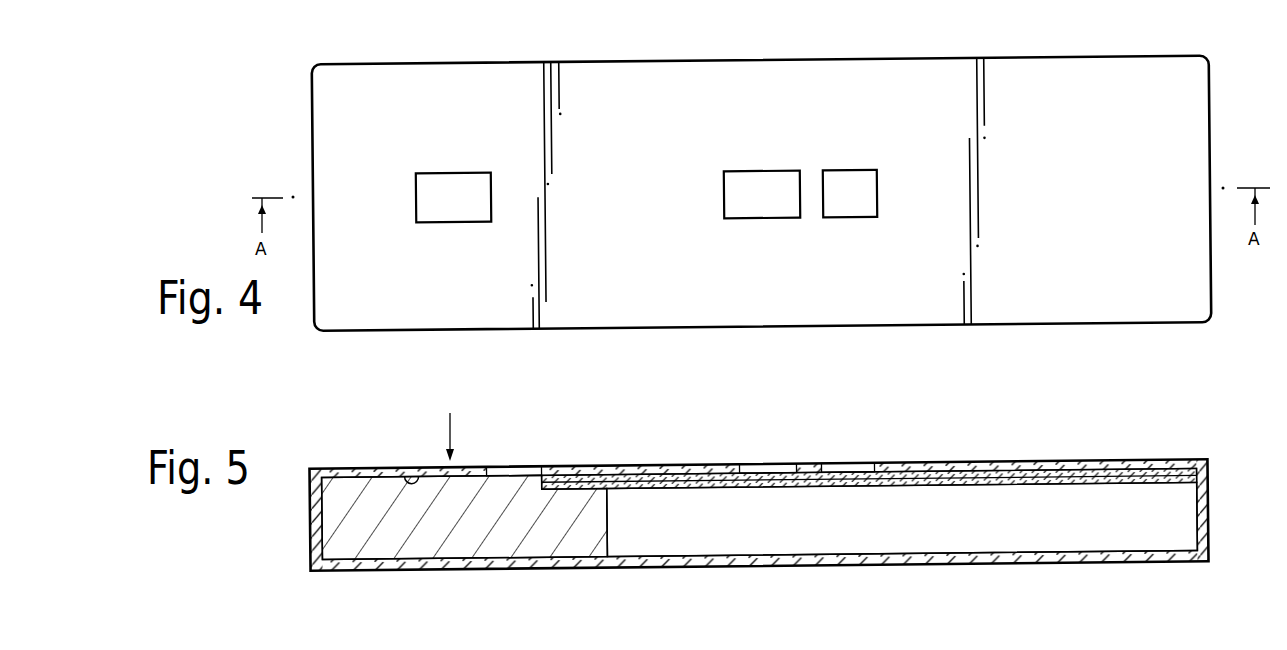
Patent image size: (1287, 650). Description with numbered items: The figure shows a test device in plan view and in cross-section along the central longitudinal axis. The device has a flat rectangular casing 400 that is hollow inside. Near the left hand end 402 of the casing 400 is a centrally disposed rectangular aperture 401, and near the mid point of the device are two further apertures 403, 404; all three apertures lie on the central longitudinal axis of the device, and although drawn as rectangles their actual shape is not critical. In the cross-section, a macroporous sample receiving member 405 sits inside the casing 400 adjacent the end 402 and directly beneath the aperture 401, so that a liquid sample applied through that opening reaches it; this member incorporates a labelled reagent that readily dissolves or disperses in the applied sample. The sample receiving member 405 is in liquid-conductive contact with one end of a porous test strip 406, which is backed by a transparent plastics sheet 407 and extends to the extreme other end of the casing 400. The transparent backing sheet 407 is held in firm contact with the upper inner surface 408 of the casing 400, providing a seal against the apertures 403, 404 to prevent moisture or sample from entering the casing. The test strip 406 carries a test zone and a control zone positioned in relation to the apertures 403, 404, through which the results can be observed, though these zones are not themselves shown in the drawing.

In FIG. 4, the casing 400 is at (1078, 203).
In FIG. 5, the casing 400 is at (1025, 460).
In FIG. 4, the rectangular aperture 401 is at (448, 212).
In FIG. 5, the rectangular aperture 401 is at (473, 470).
In FIG. 4, the left hand end 402 is at (313, 105).
In FIG. 5, the left hand end 402 is at (310, 517).
In FIG. 4, the further aperture 403 is at (760, 204).
In FIG. 5, the further aperture 403 is at (767, 468).
In FIG. 4, the further aperture 404 is at (853, 204).
In FIG. 5, the further aperture 404 is at (850, 468).
In FIG. 5, the macroporous sample receiving member 405 is at (455, 530).
In FIG. 5, the test strip 406 is at (868, 490).
In FIG. 5, the transparent plastics sheet 407 is at (740, 467).
In FIG. 5, the upper inner surface 408 is at (414, 485).